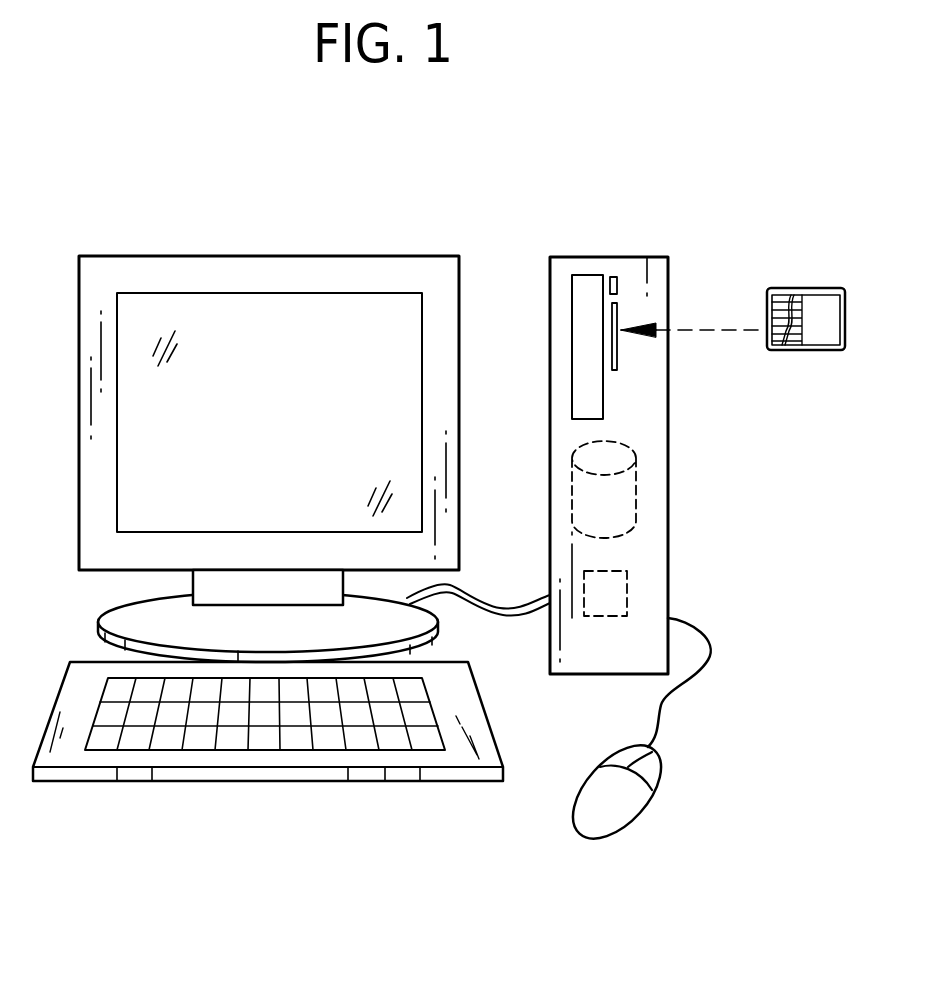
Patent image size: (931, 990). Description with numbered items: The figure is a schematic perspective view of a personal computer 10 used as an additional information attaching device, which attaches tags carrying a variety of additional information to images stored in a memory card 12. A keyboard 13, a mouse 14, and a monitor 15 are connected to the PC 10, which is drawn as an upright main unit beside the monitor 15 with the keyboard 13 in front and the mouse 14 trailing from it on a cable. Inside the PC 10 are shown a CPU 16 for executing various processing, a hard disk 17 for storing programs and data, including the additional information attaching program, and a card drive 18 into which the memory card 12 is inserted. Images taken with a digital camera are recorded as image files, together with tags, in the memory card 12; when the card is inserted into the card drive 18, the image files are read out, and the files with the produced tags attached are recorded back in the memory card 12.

The personal computer 10 is at (592, 257).
The memory card 12 is at (818, 288).
The keyboard 13 is at (87, 782).
The mouse 14 is at (623, 834).
The monitor 15 is at (335, 256).
The CPU 16 is at (627, 592).
The hard disk 17 is at (636, 507).
The card drive 18 is at (617, 361).